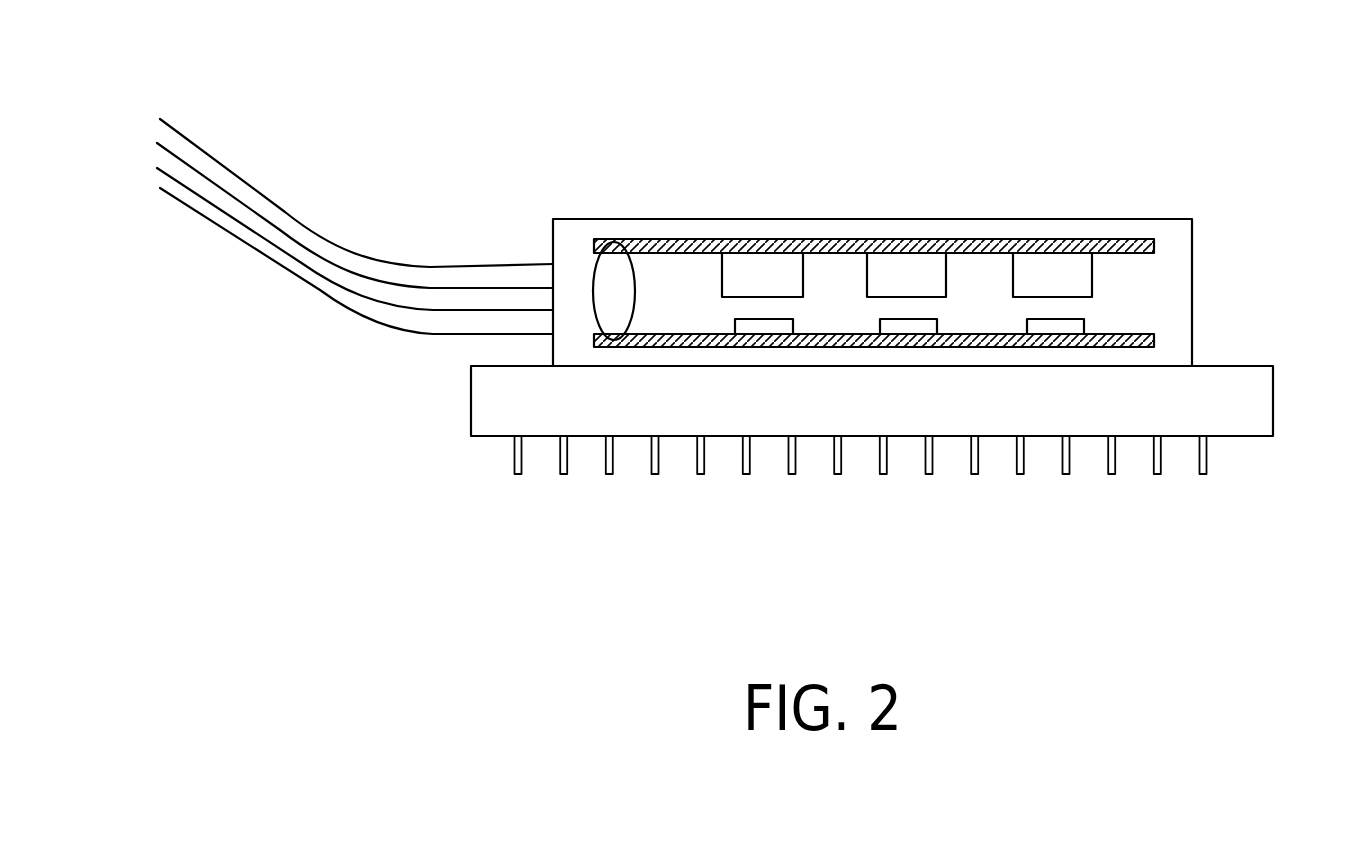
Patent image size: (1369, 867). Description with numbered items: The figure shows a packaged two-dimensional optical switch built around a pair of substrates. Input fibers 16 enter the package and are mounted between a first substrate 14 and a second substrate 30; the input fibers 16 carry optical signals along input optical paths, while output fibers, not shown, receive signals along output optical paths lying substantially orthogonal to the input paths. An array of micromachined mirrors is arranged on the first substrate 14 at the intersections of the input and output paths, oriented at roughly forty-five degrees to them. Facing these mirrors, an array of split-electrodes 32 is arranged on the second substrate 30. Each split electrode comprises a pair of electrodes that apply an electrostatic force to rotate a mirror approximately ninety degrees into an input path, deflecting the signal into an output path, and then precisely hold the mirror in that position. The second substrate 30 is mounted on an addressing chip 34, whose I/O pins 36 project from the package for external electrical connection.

The first substrate 14 is at (1035, 243).
The input fibers 16 is at (292, 218).
The second substrate 30 is at (1154, 346).
The split-electrodes 32 is at (1065, 320).
The addressing chip 34 is at (1273, 367).
The I/O pins 36 is at (1115, 490).